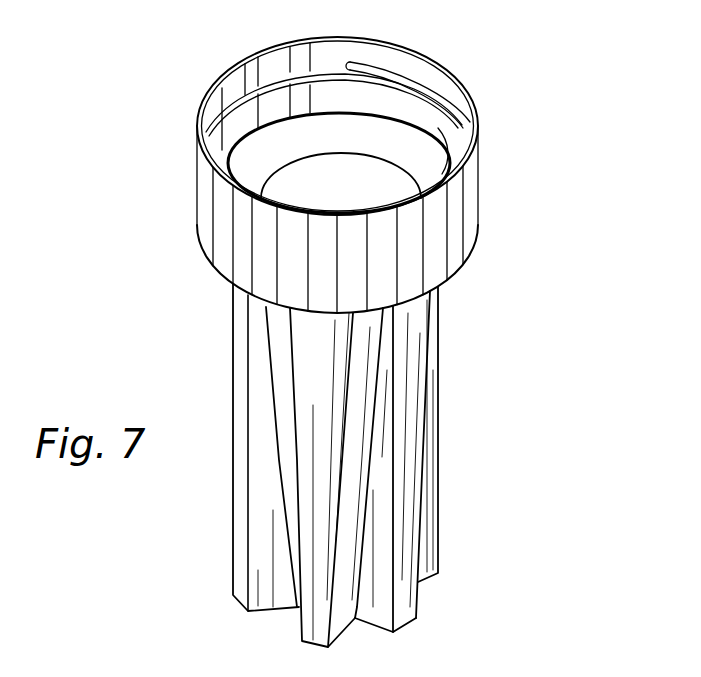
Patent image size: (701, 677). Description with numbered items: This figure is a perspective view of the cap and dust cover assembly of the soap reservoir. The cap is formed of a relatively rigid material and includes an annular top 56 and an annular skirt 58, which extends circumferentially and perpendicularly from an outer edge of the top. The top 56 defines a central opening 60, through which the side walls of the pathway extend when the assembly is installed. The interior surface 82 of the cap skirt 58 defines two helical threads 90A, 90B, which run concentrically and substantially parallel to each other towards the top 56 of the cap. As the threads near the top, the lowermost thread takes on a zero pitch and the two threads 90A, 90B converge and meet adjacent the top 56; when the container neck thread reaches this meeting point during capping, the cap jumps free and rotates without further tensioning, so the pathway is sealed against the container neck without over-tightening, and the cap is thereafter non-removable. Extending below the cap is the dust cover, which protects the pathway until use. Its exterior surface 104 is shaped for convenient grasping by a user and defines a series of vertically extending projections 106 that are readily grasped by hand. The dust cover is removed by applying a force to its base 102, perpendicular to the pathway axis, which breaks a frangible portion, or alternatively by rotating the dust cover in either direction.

The annular top 56 is at (297, 143).
The annular skirt 58 is at (456, 213).
The central opening 60 is at (318, 188).
The interior surface 82 is at (323, 55).
The helical thread 90A is at (433, 83).
The helical thread 90B is at (470, 135).
The base 102 is at (402, 612).
The exterior surface 104 is at (418, 443).
The vertically extending projections 106 is at (245, 557).